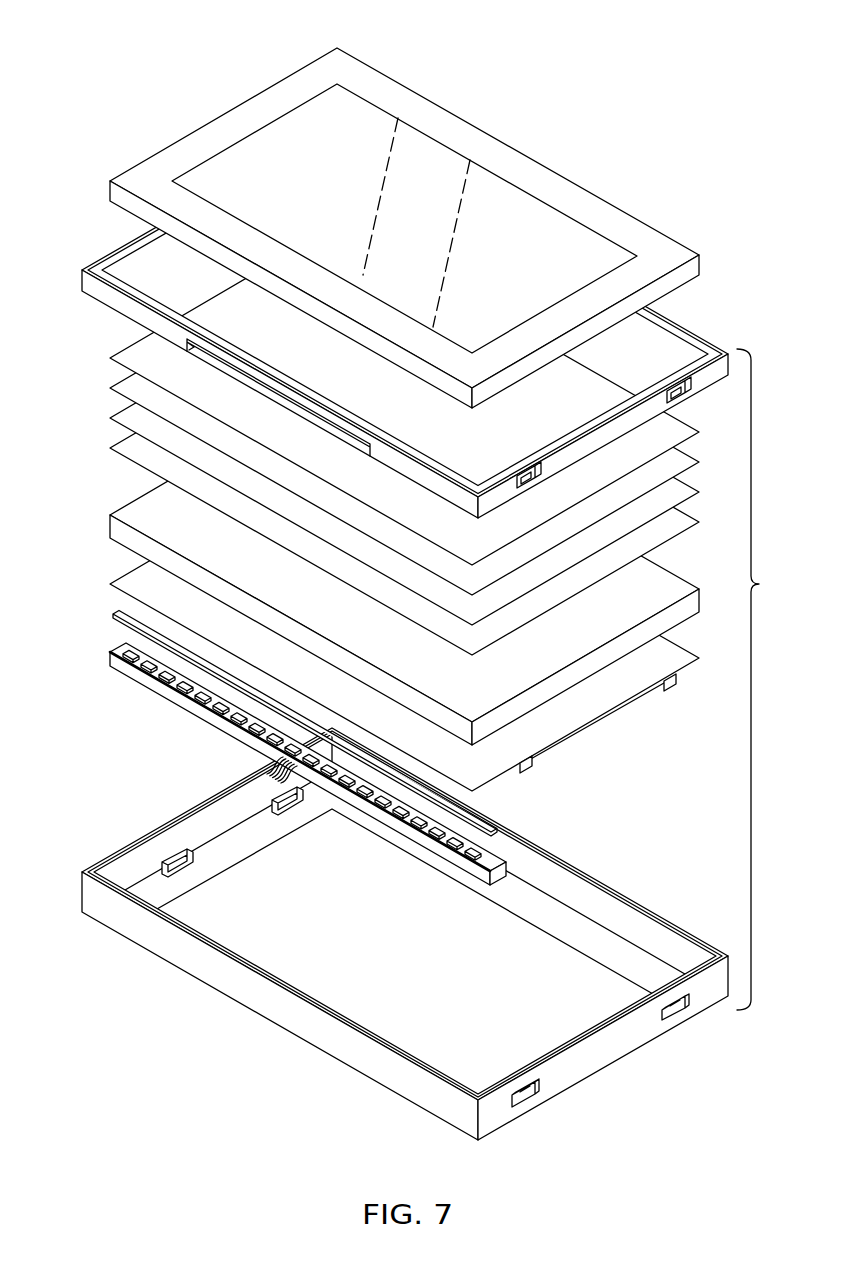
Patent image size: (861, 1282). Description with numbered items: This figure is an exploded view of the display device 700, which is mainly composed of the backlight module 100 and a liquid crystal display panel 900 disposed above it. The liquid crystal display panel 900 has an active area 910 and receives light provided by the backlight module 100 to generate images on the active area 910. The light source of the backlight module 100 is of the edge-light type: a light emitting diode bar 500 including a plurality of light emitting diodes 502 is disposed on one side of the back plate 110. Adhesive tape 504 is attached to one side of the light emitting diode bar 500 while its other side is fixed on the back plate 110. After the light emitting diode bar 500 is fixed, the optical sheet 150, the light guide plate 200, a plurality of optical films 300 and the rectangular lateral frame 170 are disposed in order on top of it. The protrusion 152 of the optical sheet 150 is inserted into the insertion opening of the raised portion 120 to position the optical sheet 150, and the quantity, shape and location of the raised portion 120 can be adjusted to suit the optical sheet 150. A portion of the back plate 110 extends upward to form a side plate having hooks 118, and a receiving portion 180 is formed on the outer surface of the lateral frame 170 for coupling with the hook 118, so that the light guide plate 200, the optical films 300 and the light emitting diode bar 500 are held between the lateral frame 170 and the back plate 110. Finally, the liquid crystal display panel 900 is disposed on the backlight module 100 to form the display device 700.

The display device 700 is at (136, 27).
The backlight module 100 is at (767, 679).
The back plate 110 is at (178, 948).
The hook 118 is at (675, 1014).
The raised portion 120 is at (283, 799).
The optical sheet 150 is at (683, 649).
The protrusion 152 is at (668, 695).
The lateral frame 170 is at (688, 326).
The receiving portion 180 is at (672, 386).
The light guide plate 200 is at (657, 590).
The optical films 300 is at (104, 352).
The light emitting diode bar 500 is at (272, 754).
The light emitting diode 502 is at (127, 648).
The adhesive tape 504 is at (115, 614).
The liquid crystal display panel 900 is at (553, 188).
The active area 910 is at (360, 125).